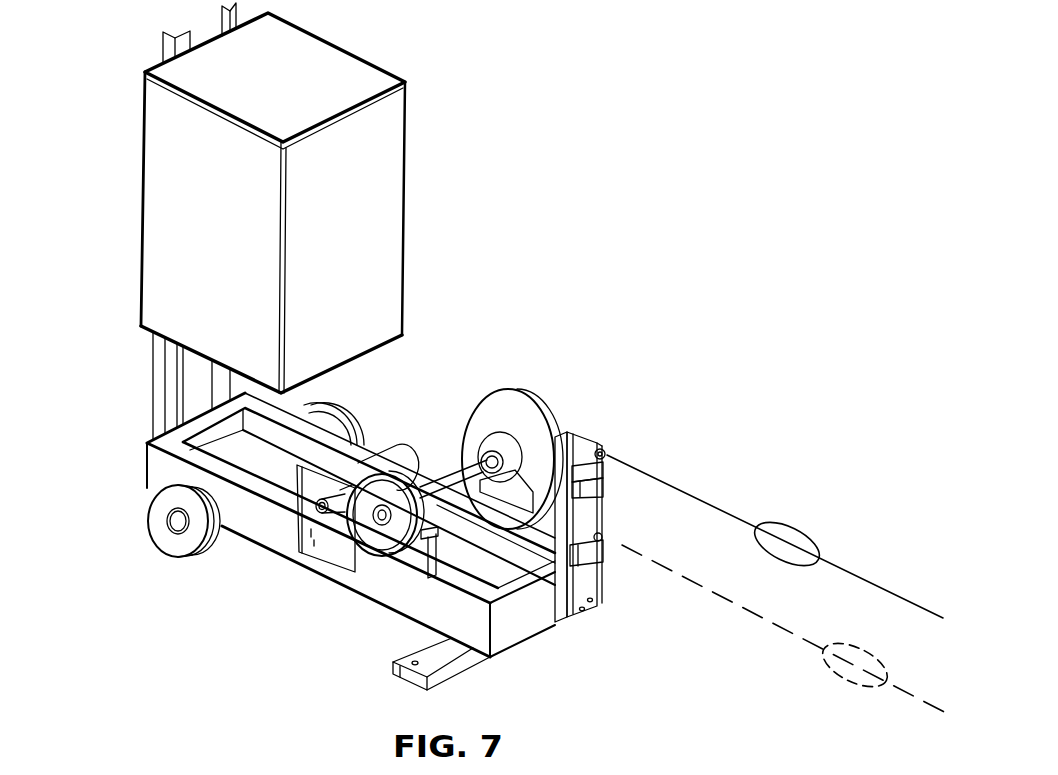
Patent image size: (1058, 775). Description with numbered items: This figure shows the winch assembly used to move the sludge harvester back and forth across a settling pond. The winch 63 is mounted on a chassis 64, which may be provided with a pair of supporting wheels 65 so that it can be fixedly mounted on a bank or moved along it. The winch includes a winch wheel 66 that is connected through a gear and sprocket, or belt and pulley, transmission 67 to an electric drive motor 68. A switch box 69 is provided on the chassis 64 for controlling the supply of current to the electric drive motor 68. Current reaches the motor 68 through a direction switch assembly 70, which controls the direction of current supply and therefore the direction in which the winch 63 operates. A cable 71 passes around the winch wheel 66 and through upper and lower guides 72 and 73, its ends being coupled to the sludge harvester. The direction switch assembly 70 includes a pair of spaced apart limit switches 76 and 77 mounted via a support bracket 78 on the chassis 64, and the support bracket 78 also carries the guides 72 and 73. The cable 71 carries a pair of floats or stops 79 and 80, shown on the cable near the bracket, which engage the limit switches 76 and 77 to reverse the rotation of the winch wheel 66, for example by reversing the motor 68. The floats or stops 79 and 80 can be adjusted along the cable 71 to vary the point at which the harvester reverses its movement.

The winch 63 is at (508, 368).
The chassis 64 is at (163, 478).
The supporting wheels 65 is at (193, 546).
The winch wheel 66 is at (540, 400).
The transmission 67 is at (335, 538).
The electric drive motor 68 is at (421, 445).
The switch box 69 is at (371, 162).
The direction switch assembly 70 is at (610, 495).
The cable 71 is at (858, 572).
The upper guide 72 is at (605, 452).
The lower guide 73 is at (603, 534).
The limit switch 76 is at (579, 453).
The limit switch 77 is at (607, 566).
The support bracket 78 is at (585, 522).
The float or stop 79 is at (795, 527).
The float or stop 80 is at (845, 681).